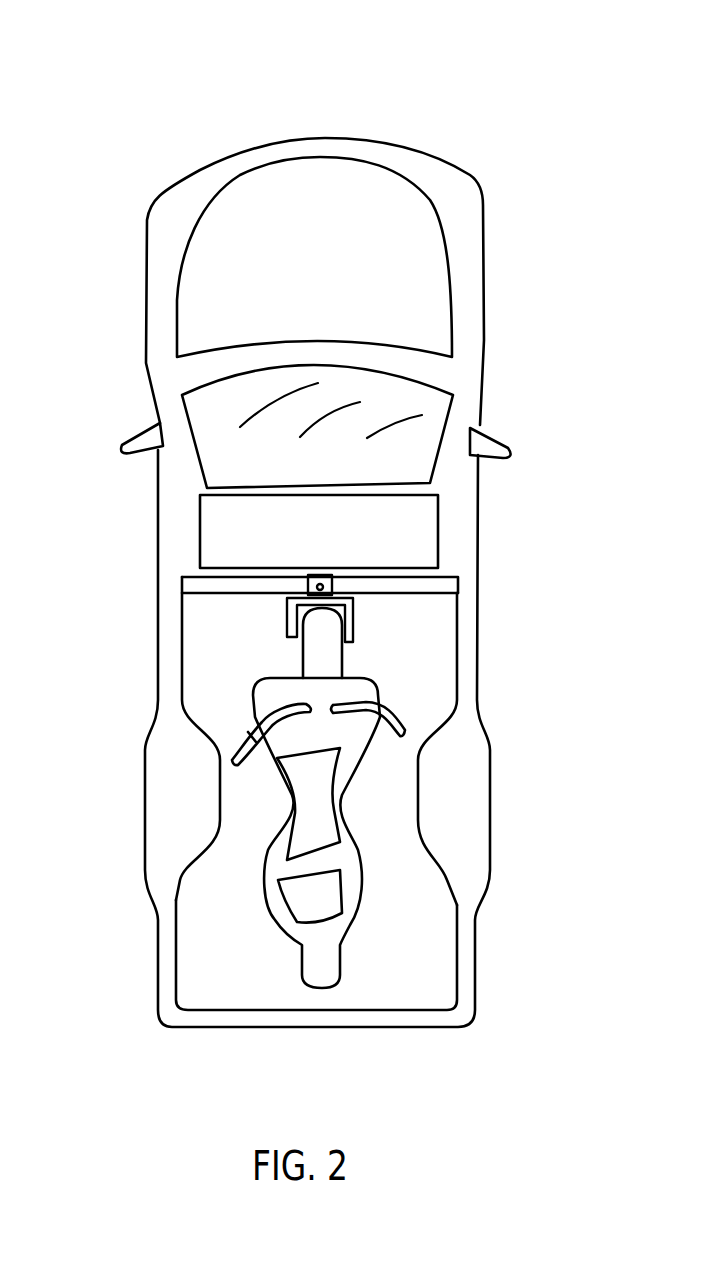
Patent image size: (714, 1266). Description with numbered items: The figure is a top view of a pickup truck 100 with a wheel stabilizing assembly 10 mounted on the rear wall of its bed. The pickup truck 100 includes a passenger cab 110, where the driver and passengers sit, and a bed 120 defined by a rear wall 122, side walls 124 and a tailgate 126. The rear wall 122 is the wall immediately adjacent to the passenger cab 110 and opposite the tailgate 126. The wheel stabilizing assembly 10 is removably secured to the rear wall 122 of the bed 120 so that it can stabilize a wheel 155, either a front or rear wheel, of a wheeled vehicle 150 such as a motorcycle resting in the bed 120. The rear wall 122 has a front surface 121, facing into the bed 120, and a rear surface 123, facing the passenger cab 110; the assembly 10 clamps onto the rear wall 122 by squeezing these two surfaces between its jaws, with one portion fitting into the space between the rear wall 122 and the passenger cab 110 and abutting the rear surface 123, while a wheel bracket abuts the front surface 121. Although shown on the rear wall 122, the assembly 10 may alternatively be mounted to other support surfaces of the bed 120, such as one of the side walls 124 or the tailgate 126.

The pickup truck 100 is at (527, 114).
The passenger cab 110 is at (477, 527).
The bed 120 is at (468, 661).
The front surface 121 is at (222, 592).
The rear wall 122 is at (212, 600).
The rear surface 123 is at (193, 573).
The side walls 124 is at (182, 676).
The tailgate 126 is at (390, 1033).
The wheel stabilizing assembly 10 is at (379, 619).
The wheeled vehicle 150 is at (353, 762).
The wheel 155 is at (303, 657).